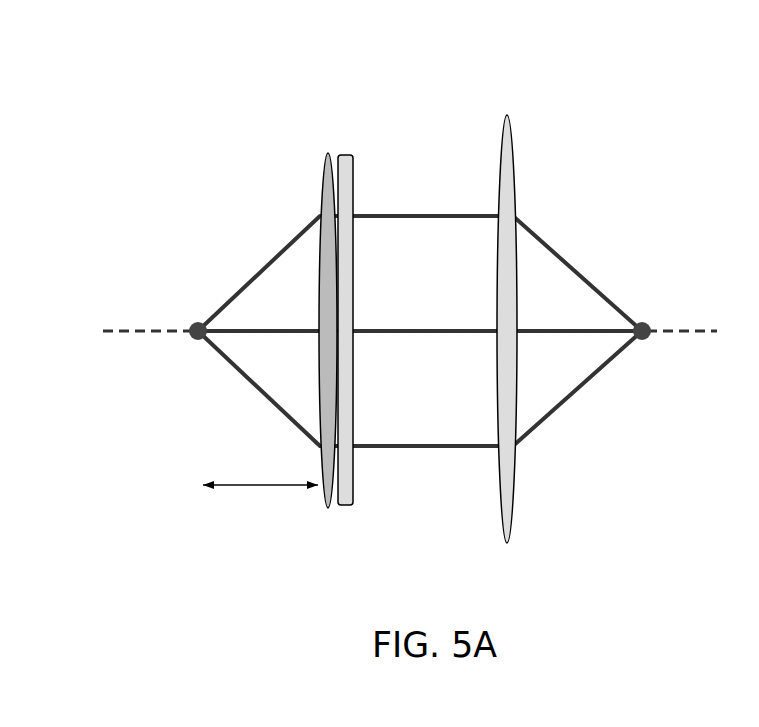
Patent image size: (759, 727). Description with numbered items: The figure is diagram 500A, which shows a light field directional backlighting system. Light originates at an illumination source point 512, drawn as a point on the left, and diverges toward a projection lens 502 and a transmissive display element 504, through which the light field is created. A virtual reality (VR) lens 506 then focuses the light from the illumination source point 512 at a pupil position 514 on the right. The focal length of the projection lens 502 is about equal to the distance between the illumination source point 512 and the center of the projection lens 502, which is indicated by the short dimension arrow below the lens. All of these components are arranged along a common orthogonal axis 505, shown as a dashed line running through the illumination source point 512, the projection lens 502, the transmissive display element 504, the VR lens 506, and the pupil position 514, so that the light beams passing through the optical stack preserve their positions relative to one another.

The diagram 500A is at (450, 30).
The projection lens 502 is at (328, 152).
The transmissive display element 504 is at (349, 153).
The orthogonal axis 505 is at (133, 340).
The virtual reality (VR) lens 506 is at (505, 113).
The illumination source point 512 is at (197, 318).
The pupil position 514 is at (650, 340).